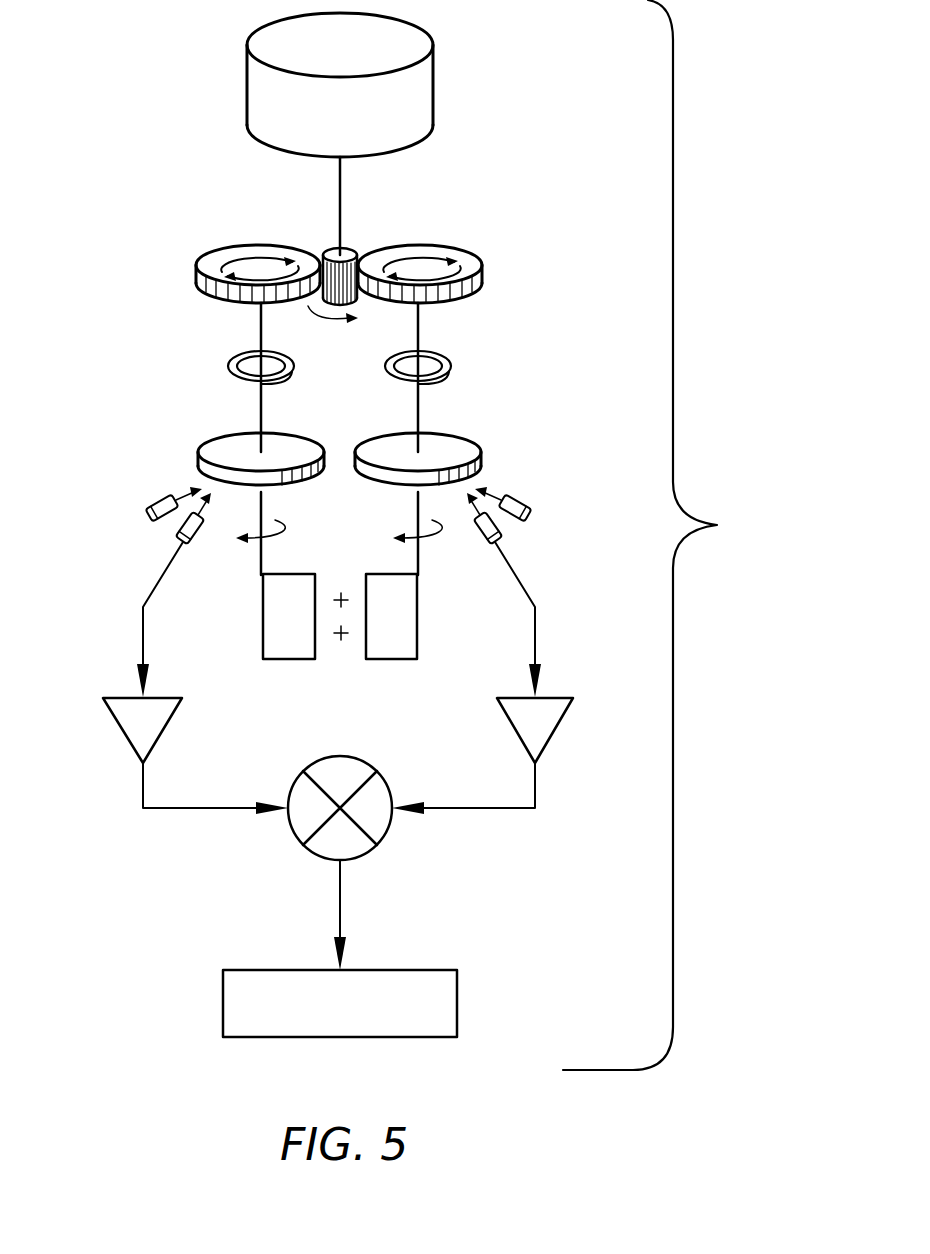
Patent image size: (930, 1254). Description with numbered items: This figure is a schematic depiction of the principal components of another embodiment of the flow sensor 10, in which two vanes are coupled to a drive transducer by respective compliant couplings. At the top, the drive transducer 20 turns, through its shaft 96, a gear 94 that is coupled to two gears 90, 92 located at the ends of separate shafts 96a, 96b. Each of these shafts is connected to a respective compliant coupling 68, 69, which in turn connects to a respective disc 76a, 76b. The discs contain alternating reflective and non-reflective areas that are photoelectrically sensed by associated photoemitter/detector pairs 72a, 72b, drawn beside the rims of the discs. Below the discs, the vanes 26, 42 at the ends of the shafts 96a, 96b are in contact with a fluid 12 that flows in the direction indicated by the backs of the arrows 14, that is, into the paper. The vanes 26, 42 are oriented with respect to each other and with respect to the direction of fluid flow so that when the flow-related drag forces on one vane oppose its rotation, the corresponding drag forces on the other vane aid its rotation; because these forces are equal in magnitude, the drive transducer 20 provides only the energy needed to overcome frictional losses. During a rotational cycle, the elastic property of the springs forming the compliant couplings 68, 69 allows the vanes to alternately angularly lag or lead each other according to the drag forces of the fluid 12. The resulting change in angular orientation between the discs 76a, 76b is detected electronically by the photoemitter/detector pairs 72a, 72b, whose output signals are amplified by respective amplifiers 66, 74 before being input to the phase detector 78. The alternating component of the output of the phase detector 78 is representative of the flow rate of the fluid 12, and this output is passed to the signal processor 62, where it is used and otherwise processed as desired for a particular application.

The flow sensor 10 is at (717, 525).
The fluid 12 is at (300, 732).
The arrows 14 is at (343, 605).
The drive transducer 20 is at (247, 100).
The vane 26 is at (263, 632).
The vane 42 is at (418, 608).
The signal processor 62 is at (223, 988).
The amplifier 66 is at (120, 727).
The compliant coupling 68 is at (236, 356).
The compliant coupling 69 is at (450, 360).
The photoemitter/detector pair 72a is at (178, 538).
The photoemitter/detector pair 72b is at (500, 538).
The amplifier 74 is at (555, 727).
The disc 76a is at (225, 440).
The disc 76b is at (444, 438).
The phase detector 78 is at (295, 838).
The gear 90 is at (215, 256).
The gear 92 is at (462, 253).
The gear 94 is at (328, 250).
The shaft 96 is at (341, 182).
The shaft 96a is at (260, 320).
The shaft 96b is at (420, 322).